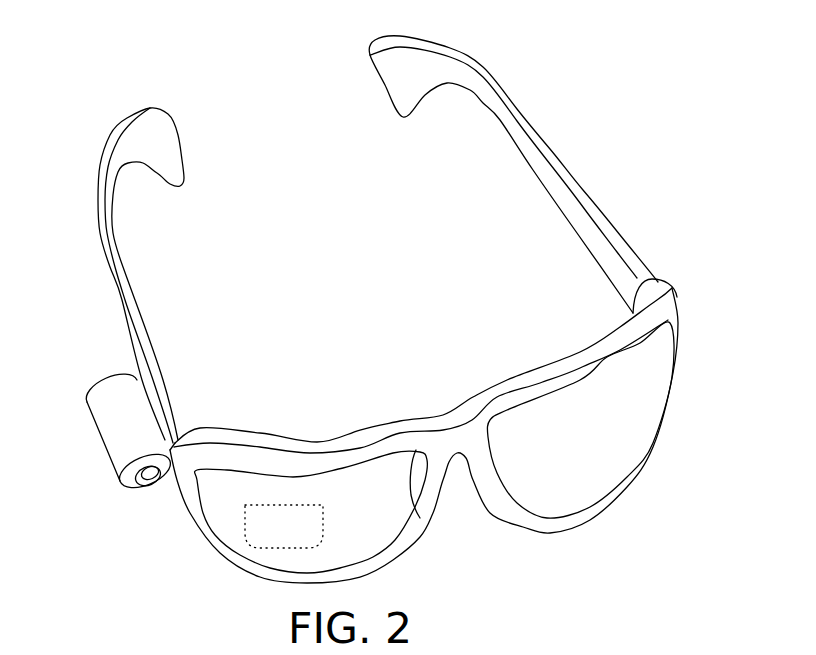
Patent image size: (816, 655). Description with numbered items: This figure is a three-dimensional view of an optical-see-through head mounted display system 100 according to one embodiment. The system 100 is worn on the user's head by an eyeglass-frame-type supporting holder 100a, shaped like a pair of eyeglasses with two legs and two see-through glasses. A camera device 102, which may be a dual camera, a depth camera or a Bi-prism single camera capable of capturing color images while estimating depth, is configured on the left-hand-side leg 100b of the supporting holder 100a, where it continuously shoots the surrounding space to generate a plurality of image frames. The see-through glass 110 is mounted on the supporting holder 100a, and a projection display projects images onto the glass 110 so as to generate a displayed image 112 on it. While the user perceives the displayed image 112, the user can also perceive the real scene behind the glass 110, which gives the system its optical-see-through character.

The optical-see-through head mounted display system 100 is at (643, 220).
The eyeglass-frame-type supporting holder 100a is at (703, 271).
The leg 100b is at (137, 357).
The camera device 102 is at (110, 433).
The see-through glass 110 is at (220, 513).
The displayed image 112 is at (270, 548).